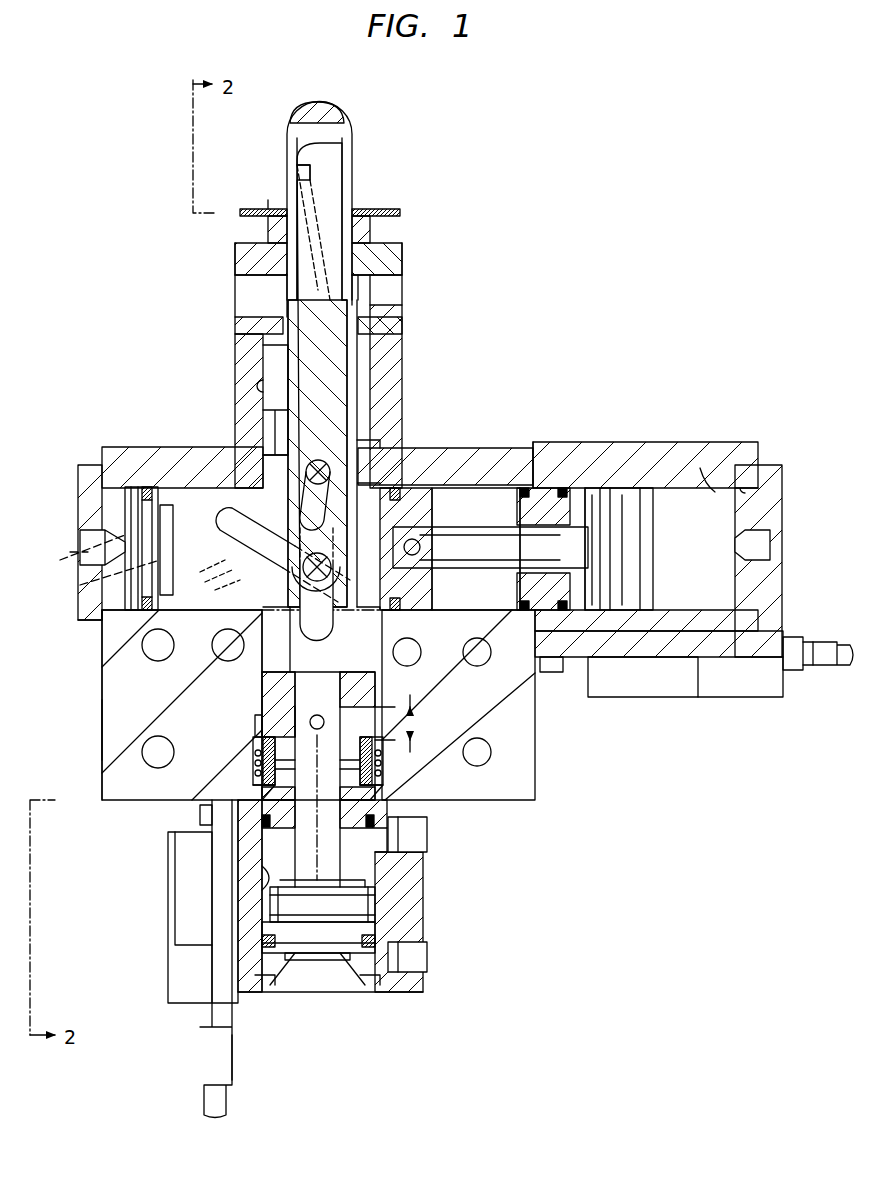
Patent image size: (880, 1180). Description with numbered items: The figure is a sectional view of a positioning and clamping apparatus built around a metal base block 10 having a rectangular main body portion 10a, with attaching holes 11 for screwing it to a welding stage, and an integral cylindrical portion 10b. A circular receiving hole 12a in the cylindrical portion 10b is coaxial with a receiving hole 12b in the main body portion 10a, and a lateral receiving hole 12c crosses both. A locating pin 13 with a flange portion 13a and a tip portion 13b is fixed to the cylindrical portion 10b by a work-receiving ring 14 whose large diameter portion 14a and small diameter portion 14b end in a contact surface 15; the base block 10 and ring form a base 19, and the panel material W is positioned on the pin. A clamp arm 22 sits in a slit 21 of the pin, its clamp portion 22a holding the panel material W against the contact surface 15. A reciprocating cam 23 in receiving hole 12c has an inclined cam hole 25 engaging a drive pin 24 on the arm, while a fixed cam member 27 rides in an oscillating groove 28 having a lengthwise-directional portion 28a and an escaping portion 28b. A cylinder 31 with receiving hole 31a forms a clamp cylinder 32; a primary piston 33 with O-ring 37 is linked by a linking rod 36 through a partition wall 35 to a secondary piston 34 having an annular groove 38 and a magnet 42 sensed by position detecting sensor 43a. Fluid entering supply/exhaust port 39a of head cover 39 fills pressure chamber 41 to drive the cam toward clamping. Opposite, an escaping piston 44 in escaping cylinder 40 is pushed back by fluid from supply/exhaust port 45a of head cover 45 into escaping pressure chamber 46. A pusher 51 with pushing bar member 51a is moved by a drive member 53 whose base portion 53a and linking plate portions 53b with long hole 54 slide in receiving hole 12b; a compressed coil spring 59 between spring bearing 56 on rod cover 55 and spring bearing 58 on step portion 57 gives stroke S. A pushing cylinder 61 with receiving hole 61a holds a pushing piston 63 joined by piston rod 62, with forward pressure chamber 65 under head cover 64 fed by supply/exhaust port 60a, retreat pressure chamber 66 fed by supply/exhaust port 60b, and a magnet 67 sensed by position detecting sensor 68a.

The base block 10 is at (100, 732).
The main body portion 10a is at (530, 744).
The cylindrical portion 10b is at (245, 364).
The attaching holes 11 is at (485, 752).
The receiving hole 12a is at (262, 386).
The receiving hole 12b is at (262, 656).
The receiving hole 12c is at (175, 500).
The locating pin 13 is at (362, 156).
The flange portion 13a is at (240, 326).
The tip portion 13b is at (316, 105).
The work-receiving ring 14 is at (408, 248).
The large diameter portion 14a is at (250, 266).
The small diameter portion 14b is at (270, 232).
The contact surface 15 is at (385, 212).
The base 19 is at (432, 324).
The slit 21 is at (335, 180).
The clamp arm 22 is at (350, 132).
The clamp portion 22a is at (303, 172).
The reciprocating cam 23 is at (170, 585).
The drive pin 24 is at (495, 560).
The cam hole 25 is at (262, 452).
The cam member 27 is at (305, 468).
The oscillating groove 28 is at (385, 452).
The lengthwise-directional portion 28a is at (375, 435).
The escaping portion 28b is at (415, 514).
The cylinder 31 is at (670, 450).
The receiving hole 31a is at (702, 470).
The clamp cylinder 32 is at (548, 462).
The primary piston 33 is at (470, 485).
The secondary piston 34 is at (598, 640).
The partition wall 35 is at (583, 490).
The linking rod 36 is at (551, 674).
The O-ring 37 is at (432, 592).
The annular groove 38 is at (635, 495).
The head cover 39 is at (770, 504).
The supply/exhaust port 39a is at (772, 548).
The escaping cylinder 40 is at (148, 465).
The pressure chamber 41 is at (500, 488).
The magnet 42 is at (620, 645).
The position detecting sensor 43a is at (800, 672).
The escaping piston 44 is at (135, 522).
The head cover 45 is at (80, 488).
The supply/exhaust port 45a is at (90, 548).
The escaping pressure chamber 46 is at (145, 596).
The pusher 51 is at (385, 356).
The pushing bar member 51a is at (380, 268).
The drive member 53 is at (245, 680).
The base portion 53a is at (100, 722).
The linking plate portions 53b is at (230, 616).
The long hole 54 is at (160, 645).
The rod cover 55 is at (385, 806).
The spring bearing 56 is at (255, 792).
The step portion 57 is at (255, 728).
The spring bearing 58 is at (253, 760).
The compressed coil spring 59 is at (255, 770).
The supply/exhaust port 60a is at (415, 962).
The supply/exhaust port 60b is at (415, 846).
The pushing cylinder 61 is at (410, 922).
The receiving hole 61a is at (262, 878).
The piston rod 62 is at (262, 862).
The pushing piston 63 is at (318, 900).
The head cover 64 is at (328, 960).
The forward pressure chamber 65 is at (295, 965).
The retreat pressure chamber 66 is at (300, 850).
The magnet 67 is at (342, 950).
The position detecting sensor 68a is at (218, 1018).
The stroke S is at (401, 723).
The panel material W is at (266, 208).